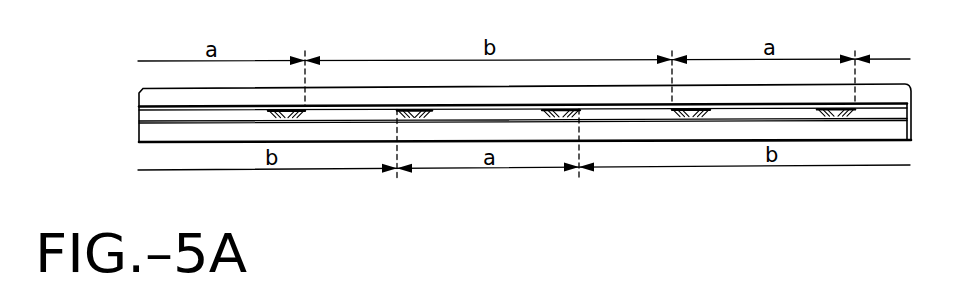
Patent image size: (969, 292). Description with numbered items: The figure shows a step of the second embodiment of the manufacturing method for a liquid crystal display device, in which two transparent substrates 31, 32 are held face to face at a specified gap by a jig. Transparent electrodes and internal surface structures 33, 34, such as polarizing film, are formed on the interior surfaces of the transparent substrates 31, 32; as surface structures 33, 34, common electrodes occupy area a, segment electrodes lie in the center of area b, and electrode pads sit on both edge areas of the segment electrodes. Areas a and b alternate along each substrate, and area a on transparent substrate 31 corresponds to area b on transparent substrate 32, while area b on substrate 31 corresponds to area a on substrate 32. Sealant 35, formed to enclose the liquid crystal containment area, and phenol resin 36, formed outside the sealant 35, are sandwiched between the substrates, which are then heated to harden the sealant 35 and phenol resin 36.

The transparent substrate 31 is at (395, 88).
The transparent substrate 32 is at (722, 142).
The internal surface structure 33 is at (616, 105).
The internal surface structure 34 is at (340, 123).
The sealant 35 is at (274, 110).
The phenol resin 36 is at (680, 118).